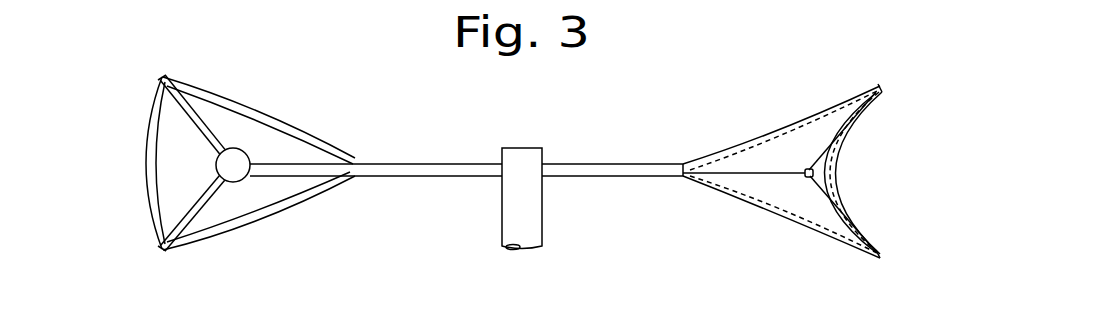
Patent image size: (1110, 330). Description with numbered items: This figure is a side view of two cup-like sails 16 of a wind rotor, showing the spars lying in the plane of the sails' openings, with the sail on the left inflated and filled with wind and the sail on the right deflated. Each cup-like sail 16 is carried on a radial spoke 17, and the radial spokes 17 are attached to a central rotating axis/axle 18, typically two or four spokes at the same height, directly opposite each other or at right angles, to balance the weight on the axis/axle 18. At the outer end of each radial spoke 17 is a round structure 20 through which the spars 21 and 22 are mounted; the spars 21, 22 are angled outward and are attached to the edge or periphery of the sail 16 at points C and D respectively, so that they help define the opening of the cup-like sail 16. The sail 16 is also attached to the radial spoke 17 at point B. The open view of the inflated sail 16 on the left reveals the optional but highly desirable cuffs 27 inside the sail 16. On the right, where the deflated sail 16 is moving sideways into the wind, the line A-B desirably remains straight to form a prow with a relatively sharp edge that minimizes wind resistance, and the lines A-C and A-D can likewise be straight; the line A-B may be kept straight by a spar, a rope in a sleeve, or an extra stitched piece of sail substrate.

The cup-like sail 16 is at (246, 200).
The radial spoke 17 is at (453, 166).
The central axis/axle 18 is at (515, 215).
The round structure 20 is at (232, 148).
The spar 21 is at (192, 130).
The spar 22 is at (193, 193).
The cuff 27 is at (262, 114).
The point A is at (232, 184).
The point B is at (357, 158).
The point C is at (161, 76).
The point D is at (160, 250).